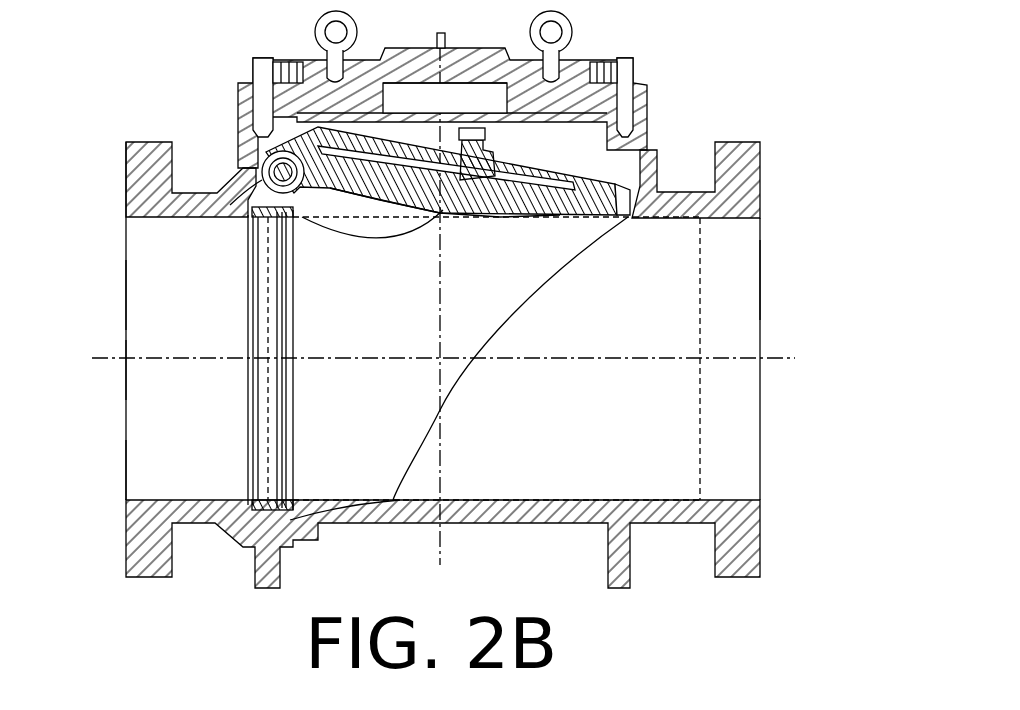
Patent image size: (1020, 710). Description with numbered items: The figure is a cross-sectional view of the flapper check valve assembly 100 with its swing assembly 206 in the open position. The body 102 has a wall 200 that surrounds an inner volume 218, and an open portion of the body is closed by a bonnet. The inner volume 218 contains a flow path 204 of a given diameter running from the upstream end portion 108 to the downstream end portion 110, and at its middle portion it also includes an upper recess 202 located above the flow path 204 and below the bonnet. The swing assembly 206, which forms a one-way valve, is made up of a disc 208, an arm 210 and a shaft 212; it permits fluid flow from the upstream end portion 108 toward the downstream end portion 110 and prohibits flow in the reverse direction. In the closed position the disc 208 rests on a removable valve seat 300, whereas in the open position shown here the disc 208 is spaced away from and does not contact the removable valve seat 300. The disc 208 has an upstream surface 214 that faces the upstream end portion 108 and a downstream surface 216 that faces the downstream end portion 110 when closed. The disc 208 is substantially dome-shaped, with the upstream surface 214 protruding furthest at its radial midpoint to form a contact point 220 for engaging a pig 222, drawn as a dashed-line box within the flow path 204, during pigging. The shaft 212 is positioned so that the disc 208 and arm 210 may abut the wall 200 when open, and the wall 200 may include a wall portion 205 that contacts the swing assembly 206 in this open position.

The flapper check valve assembly 100 is at (170, 68).
The body 102 is at (730, 457).
The upstream end portion 108 is at (150, 297).
The downstream end portion 110 is at (737, 282).
The wall 200 is at (357, 527).
The upper recess 202 is at (467, 128).
The flow path 204 is at (150, 378).
The wall portion 205 is at (618, 200).
The swing assembly 206 is at (283, 122).
The disc 208 is at (543, 200).
The arm 210 is at (412, 150).
The shaft 212 is at (262, 195).
The upstream surface 214 is at (465, 215).
The downstream surface 216 is at (562, 180).
The inner volume 218 is at (150, 473).
The contact point 220 is at (440, 215).
The pig 222 is at (702, 400).
The removable valve seat 300 is at (228, 430).